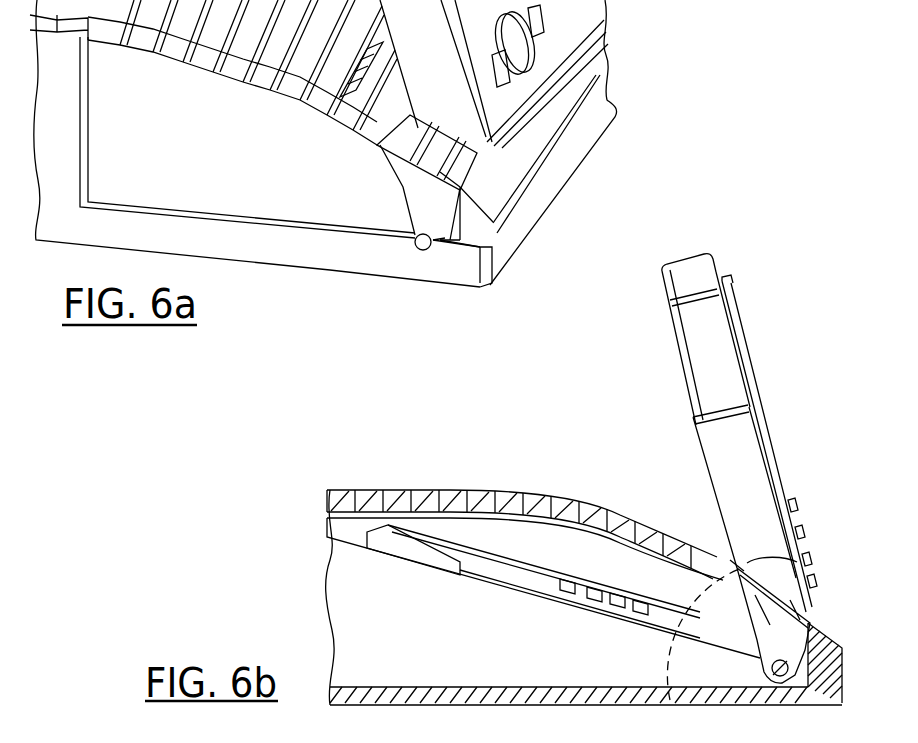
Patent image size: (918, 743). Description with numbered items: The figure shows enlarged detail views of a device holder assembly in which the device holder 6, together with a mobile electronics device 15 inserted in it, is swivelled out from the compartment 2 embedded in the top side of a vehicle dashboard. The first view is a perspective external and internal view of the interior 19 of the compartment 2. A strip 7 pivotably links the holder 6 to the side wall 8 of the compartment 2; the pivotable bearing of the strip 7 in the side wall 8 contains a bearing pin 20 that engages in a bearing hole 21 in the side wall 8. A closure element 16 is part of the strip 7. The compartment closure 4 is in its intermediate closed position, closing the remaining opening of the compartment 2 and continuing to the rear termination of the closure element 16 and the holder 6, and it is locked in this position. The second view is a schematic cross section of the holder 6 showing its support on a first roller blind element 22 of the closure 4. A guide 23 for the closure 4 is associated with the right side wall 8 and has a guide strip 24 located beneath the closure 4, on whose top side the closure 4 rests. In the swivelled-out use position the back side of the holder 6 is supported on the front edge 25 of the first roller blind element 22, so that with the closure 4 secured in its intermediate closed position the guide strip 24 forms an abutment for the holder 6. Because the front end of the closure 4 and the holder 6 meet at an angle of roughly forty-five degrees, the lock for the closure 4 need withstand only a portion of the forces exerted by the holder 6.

In FIG. 6B, the compartment 2 is at (303, 502).
In FIG. 6A, the compartment closure 4 is at (227, 19).
In FIG. 6B, the compartment closure 4 is at (398, 490).
In FIG. 6A, the device holder 6 is at (547, 77).
In FIG. 6B, the device holder 6 is at (700, 450).
In FIG. 6A, the strip 7 is at (427, 190).
In FIG. 6B, the strip 7 is at (785, 649).
In FIG. 6A, the side wall 8 is at (63, 163).
In FIG. 6A, the mobile electronics device 15 is at (547, 47).
In FIG. 6B, the mobile electronics device 15 is at (752, 337).
In FIG. 6A, the closure element 16 is at (470, 173).
In FIG. 6B, the closure element 16 is at (848, 590).
In FIG. 6A, the interior 19 is at (229, 166).
In FIG. 6B, the interior 19 is at (459, 640).
In FIG. 6A, the bearing pin 20 is at (415, 243).
In FIG. 6A, the bearing hole 21 is at (427, 258).
In FIG. 6B, the first roller blind element 22 is at (723, 563).
In FIG. 6B, the guide 23 is at (737, 578).
In FIG. 6B, the guide strip 24 is at (640, 552).
In FIG. 6B, the front edge 25 is at (737, 567).